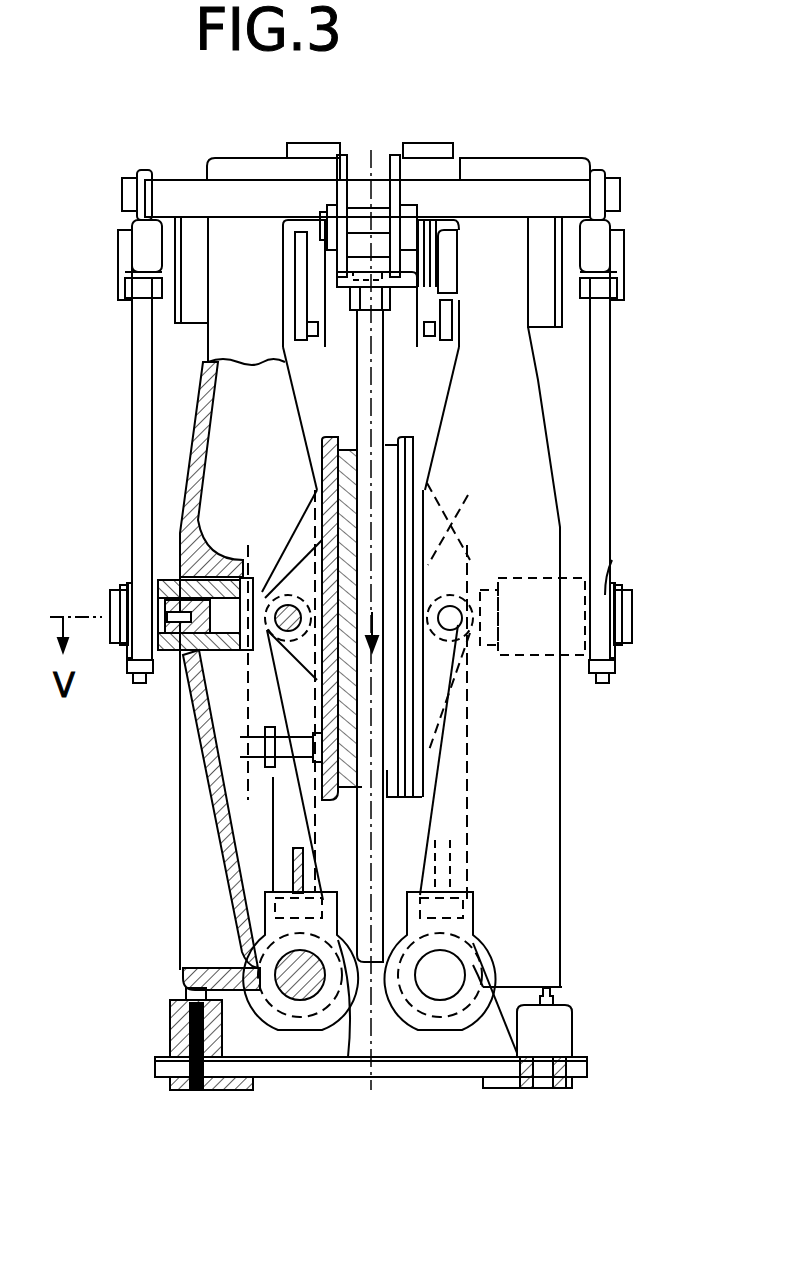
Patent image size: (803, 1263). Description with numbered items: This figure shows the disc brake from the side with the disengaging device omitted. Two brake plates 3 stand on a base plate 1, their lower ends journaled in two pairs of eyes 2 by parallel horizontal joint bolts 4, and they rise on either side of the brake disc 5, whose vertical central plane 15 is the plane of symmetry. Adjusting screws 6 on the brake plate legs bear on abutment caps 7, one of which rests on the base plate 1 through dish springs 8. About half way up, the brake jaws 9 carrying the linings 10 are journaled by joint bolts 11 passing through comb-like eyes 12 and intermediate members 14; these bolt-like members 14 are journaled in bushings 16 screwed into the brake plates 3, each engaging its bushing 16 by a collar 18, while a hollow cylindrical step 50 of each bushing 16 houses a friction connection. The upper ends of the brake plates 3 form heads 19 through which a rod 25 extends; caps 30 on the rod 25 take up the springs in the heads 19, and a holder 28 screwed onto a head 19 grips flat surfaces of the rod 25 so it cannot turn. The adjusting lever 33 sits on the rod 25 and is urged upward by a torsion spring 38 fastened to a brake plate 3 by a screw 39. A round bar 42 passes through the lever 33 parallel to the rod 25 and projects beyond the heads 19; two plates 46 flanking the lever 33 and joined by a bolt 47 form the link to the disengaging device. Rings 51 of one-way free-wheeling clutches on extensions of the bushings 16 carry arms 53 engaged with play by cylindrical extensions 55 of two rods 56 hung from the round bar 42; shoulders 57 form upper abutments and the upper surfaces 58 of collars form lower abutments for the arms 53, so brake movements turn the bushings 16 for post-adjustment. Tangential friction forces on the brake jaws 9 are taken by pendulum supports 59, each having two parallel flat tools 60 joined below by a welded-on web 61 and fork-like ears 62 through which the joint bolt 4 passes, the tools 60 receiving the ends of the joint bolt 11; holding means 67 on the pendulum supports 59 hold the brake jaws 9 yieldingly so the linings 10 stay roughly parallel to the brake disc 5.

The base plate 1 is at (400, 1077).
The eyes 2 is at (474, 973).
The brake plates 3 is at (212, 415).
The joint bolts 4 is at (290, 995).
The brake disc 5 is at (374, 358).
The adjusting screws 6 is at (190, 996).
The abutment caps 7 is at (178, 1030).
The dish springs 8 is at (170, 1082).
The brake jaws 9 is at (414, 440).
The linings 10 is at (343, 440).
The joint bolts 11 is at (452, 615).
The eyes 12 is at (303, 570).
The intermediate members 14 is at (222, 615).
The vertical central plane 15 is at (374, 392).
The bushings 16 is at (168, 655).
The collar 18 is at (256, 590).
The heads 19 is at (228, 164).
The rod 25 is at (615, 258).
The bracket 28 is at (307, 330).
The caps 30 is at (193, 315).
The adjusting lever 33 is at (373, 180).
The torsion spring 38 is at (416, 290).
The screw 39 is at (450, 352).
The round bar 42 is at (555, 185).
The plates 46 is at (342, 180).
The bolt 47 is at (417, 215).
The hollow cylindrical step 50 is at (110, 598).
The rings 51 is at (104, 645).
The arms 53 is at (125, 585).
The cylindrical extensions 55 is at (118, 665).
The rods 56 is at (133, 350).
The shoulders 57 is at (612, 580).
The upper surfaces 58 is at (142, 685).
The pendulum supports 59 is at (485, 790).
The flat tools 60 is at (467, 740).
The web 61 is at (303, 868).
The ears 62 is at (485, 970).
The holding means 67 is at (258, 757).